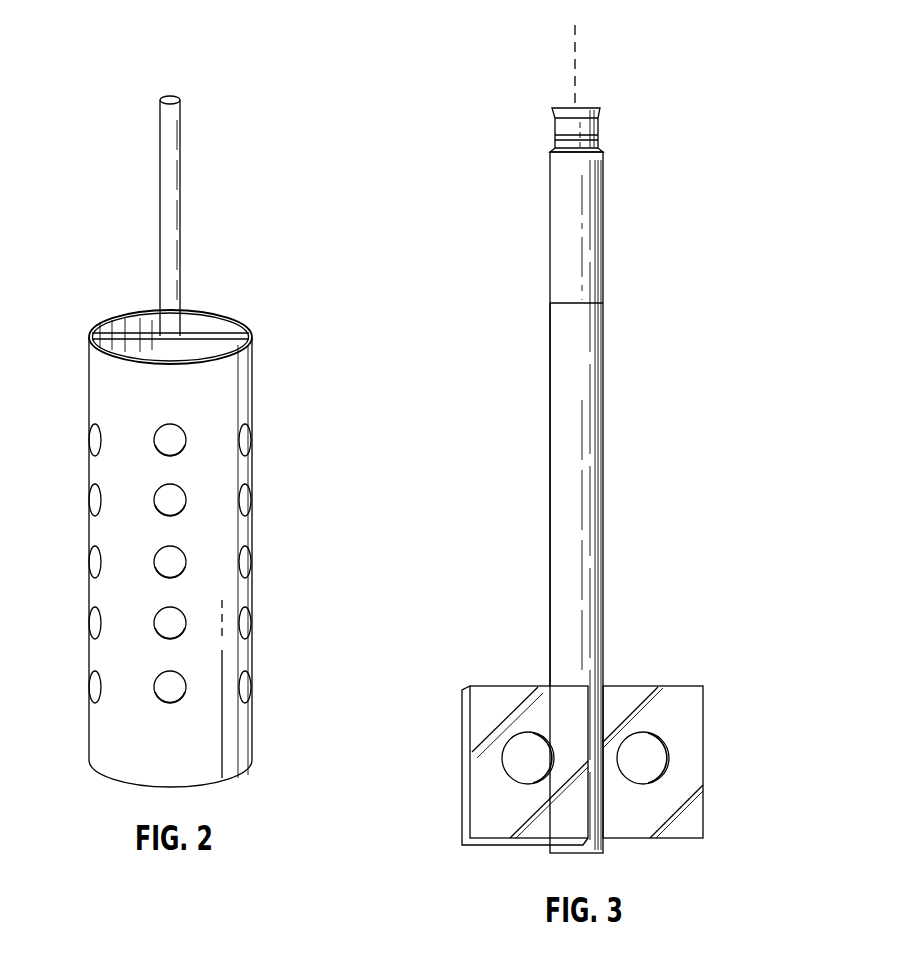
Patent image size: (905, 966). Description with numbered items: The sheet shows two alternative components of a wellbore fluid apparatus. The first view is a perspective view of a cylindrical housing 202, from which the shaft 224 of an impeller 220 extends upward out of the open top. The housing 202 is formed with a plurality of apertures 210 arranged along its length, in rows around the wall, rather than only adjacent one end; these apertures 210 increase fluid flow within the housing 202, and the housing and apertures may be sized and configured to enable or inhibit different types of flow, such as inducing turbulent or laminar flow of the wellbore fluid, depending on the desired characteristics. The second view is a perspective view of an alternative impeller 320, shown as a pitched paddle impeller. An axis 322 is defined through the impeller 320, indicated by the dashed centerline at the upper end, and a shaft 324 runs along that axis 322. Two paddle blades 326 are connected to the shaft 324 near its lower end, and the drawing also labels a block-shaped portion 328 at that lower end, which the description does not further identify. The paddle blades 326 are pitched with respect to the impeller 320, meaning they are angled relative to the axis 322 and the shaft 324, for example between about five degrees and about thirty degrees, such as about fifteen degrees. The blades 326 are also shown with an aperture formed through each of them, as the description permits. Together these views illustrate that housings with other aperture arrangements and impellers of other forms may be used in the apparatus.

In FIG. 2, the housing 202 is at (255, 385).
In FIG. 2, the apertures 210 is at (92, 487).
In FIG. 2, the impeller 220 is at (215, 310).
In FIG. 2, the shaft 224 is at (183, 203).
In FIG. 3, the impeller 320 is at (612, 473).
In FIG. 3, the axis 322 is at (579, 66).
In FIG. 3, the shaft 324 is at (573, 378).
In FIG. 3, the paddle blades 326 is at (703, 816).
In FIG. 3, the block 328 is at (687, 727).